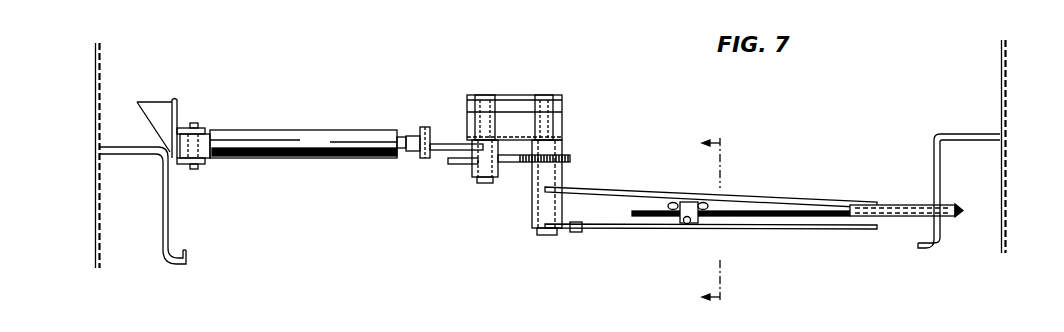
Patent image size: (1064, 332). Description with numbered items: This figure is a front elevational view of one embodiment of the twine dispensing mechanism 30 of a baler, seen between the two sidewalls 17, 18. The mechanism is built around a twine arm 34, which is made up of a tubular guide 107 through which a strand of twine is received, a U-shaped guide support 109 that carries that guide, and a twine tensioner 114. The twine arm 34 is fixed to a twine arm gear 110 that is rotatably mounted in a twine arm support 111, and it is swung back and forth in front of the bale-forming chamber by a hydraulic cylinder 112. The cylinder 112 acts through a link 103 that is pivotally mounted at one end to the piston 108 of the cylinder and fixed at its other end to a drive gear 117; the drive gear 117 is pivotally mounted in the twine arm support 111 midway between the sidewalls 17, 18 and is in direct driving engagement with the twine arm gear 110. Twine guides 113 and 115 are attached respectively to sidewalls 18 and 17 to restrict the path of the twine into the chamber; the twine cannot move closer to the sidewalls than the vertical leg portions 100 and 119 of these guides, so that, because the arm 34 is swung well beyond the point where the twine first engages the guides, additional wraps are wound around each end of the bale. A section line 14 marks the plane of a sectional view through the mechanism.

The sidewall 17 is at (95, 80).
The sidewall 18 is at (1007, 91).
The twine dispensing mechanism 30 is at (524, 80).
The twine arm 34 is at (775, 196).
The vertical leg portion 100 is at (941, 226).
The link 103 is at (447, 144).
The tubular guide 107 is at (895, 205).
The piston 108 is at (401, 135).
The U-shaped guide support 109 is at (636, 190).
The twine arm gear 110 is at (572, 157).
The twine arm support 111 is at (503, 97).
The hydraulic cylinder 112 is at (277, 135).
The twine guide 113 is at (944, 134).
The twine tensioner 114 is at (690, 233).
The twine guide 115 is at (123, 147).
The drive gear 117 is at (455, 165).
The vertical leg portion 119 is at (170, 205).
The section line 14- 14 is at (721, 219).